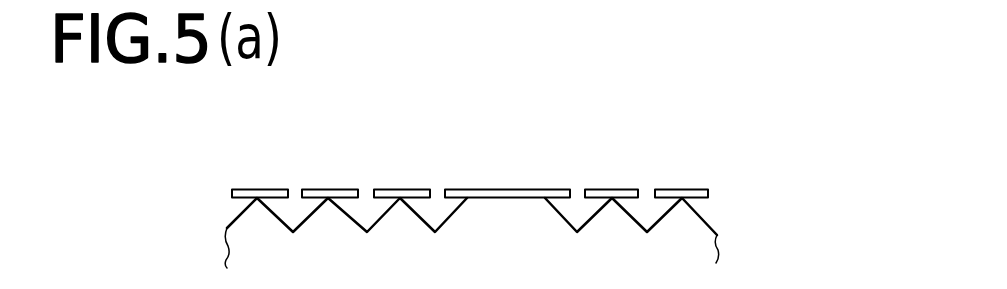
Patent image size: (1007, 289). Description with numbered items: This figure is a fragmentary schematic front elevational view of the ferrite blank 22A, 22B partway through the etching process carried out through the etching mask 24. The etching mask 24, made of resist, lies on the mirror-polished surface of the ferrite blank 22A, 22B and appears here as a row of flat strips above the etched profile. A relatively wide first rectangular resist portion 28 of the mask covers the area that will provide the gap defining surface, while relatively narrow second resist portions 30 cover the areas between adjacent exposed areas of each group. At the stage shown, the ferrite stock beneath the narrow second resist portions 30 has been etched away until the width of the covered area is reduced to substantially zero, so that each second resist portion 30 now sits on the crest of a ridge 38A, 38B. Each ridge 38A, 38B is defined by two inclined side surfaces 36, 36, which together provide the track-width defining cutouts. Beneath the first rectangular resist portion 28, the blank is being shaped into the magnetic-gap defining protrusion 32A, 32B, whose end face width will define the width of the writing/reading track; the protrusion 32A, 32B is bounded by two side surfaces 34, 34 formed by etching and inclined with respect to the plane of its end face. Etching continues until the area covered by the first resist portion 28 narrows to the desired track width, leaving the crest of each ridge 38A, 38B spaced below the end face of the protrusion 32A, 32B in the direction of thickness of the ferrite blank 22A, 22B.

The ferrite blank 22A is at (790, 260).
The ferrite blank 22B is at (695, 248).
The etching mask 24 is at (549, 153).
The first rectangular resist portion 28 is at (508, 189).
The second resist portion 30 is at (331, 188).
The magnetic-gap defining protrusion 32A is at (511, 182).
The magnetic-gap defining protrusion 32B is at (495, 213).
The side surface 34 is at (460, 205).
The side surface 36 is at (377, 213).
The ridge 38A is at (466, 149).
The ridge 38B is at (248, 217).